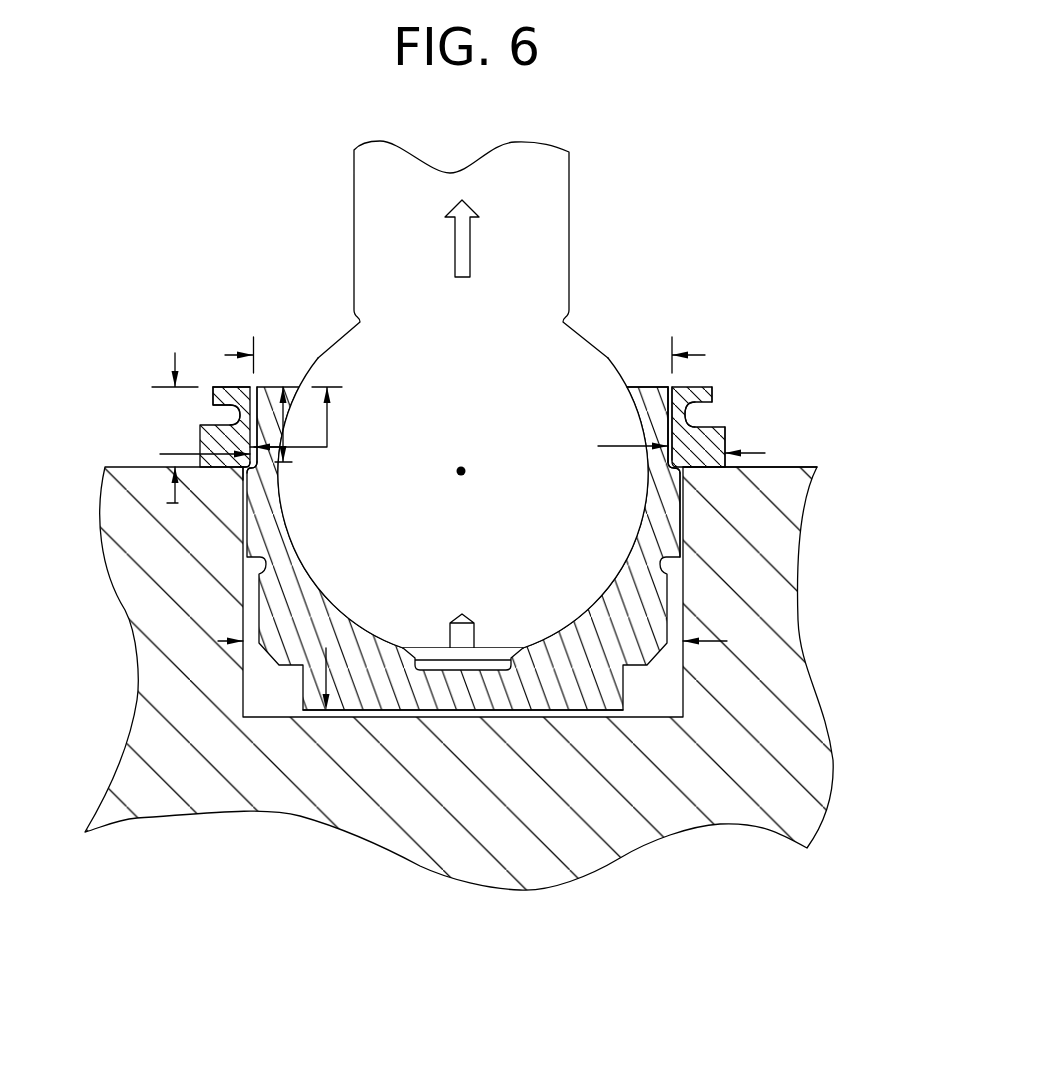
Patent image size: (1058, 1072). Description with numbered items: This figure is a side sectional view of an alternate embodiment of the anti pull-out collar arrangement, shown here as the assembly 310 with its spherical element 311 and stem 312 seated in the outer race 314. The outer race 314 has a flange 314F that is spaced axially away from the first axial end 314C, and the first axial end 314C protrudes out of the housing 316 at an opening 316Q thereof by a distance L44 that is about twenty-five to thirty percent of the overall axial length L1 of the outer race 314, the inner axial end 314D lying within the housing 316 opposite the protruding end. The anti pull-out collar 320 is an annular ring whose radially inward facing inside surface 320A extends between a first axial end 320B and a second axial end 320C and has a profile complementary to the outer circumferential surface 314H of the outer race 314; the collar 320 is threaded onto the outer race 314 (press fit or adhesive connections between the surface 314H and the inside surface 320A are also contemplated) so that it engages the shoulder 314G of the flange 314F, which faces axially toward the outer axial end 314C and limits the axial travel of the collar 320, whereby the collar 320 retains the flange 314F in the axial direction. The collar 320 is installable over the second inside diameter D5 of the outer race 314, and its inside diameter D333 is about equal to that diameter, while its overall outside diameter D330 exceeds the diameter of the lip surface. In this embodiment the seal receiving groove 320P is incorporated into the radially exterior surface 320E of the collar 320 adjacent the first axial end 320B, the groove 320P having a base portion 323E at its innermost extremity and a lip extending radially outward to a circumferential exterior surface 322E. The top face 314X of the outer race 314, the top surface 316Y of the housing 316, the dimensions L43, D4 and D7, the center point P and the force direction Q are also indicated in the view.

The valve assembly 310 is at (852, 268).
The ball 311 is at (350, 590).
The stem 312 is at (545, 178).
The outer race 314 is at (640, 598).
The first axial end 314C is at (660, 387).
The inner axial end 314D is at (583, 713).
The flange 314F is at (662, 527).
The shoulder 314G is at (680, 470).
The outer circumferential surface 314H is at (708, 387).
The seat top surface 314X is at (645, 371).
The housing 316 is at (790, 755).
The opening 316Q is at (243, 468).
The housing top surface 316Y is at (815, 469).
The anti pull-out collar 320 is at (205, 445).
The inside surface 320A is at (635, 387).
The first axial end 320B is at (233, 387).
The second axial end 320C is at (247, 463).
The radially exterior surface 320E is at (714, 413).
The seal receiving groove 320P is at (727, 427).
The circumferential exterior surface 322E is at (213, 401).
The base portion 323E is at (240, 418).
The overall axial length L1 is at (327, 442).
The dimension L43 is at (170, 502).
The protrusion distance L44 is at (284, 395).
The dimension D4 is at (702, 355).
The second inside diameter D5 is at (727, 432).
The dimension D7 is at (710, 642).
The overall outside diameter D330 is at (757, 467).
The inside diameter D333 is at (598, 446).
The center point P is at (466, 472).
The direction Q is at (476, 258).